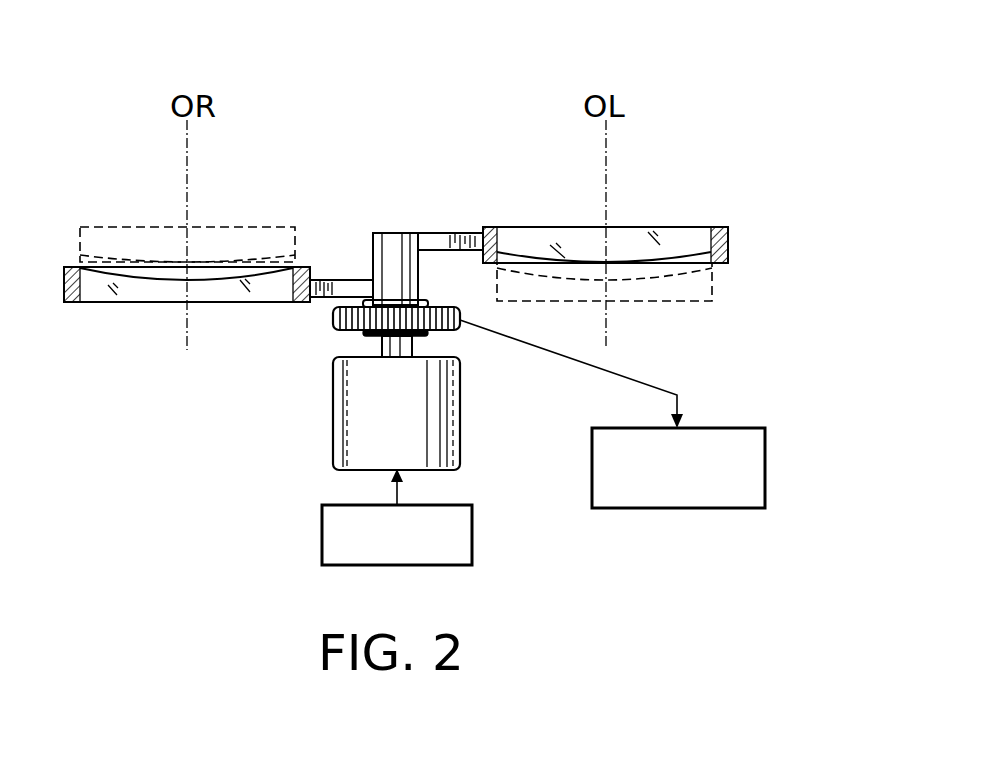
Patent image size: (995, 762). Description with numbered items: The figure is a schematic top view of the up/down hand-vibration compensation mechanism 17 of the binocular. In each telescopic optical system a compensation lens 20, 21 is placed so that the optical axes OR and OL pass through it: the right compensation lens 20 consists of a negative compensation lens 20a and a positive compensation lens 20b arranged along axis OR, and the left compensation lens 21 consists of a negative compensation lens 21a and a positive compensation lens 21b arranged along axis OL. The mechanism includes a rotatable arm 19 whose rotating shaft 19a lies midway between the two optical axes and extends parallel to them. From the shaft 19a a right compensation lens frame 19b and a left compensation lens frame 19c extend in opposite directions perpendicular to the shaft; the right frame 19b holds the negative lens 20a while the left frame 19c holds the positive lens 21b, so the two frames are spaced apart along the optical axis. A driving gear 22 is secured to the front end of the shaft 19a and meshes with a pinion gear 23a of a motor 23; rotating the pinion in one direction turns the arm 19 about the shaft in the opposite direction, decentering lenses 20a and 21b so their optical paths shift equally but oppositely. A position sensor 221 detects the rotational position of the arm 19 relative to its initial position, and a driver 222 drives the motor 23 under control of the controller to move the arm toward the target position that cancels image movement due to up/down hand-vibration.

The up/down compensation mechanism 17 is at (660, 76).
The rotatable arm 19 is at (493, 166).
The rotating shaft 19a is at (405, 278).
The right compensation lens frame 19b is at (340, 287).
The left compensation lens frame 19c is at (453, 235).
The compensation lens 20 is at (180, 166).
The negative compensation lens 20a is at (125, 292).
The positive compensation lens 20b is at (167, 247).
The compensation lens 21 is at (750, 170).
The negative compensation lens 21a is at (628, 283).
The positive compensation lens 21b is at (690, 243).
The driving gear 22 is at (332, 313).
The motor 23 is at (453, 410).
The pinion gear 23a is at (377, 340).
The position sensor 221 is at (650, 508).
The driver 222 is at (322, 538).